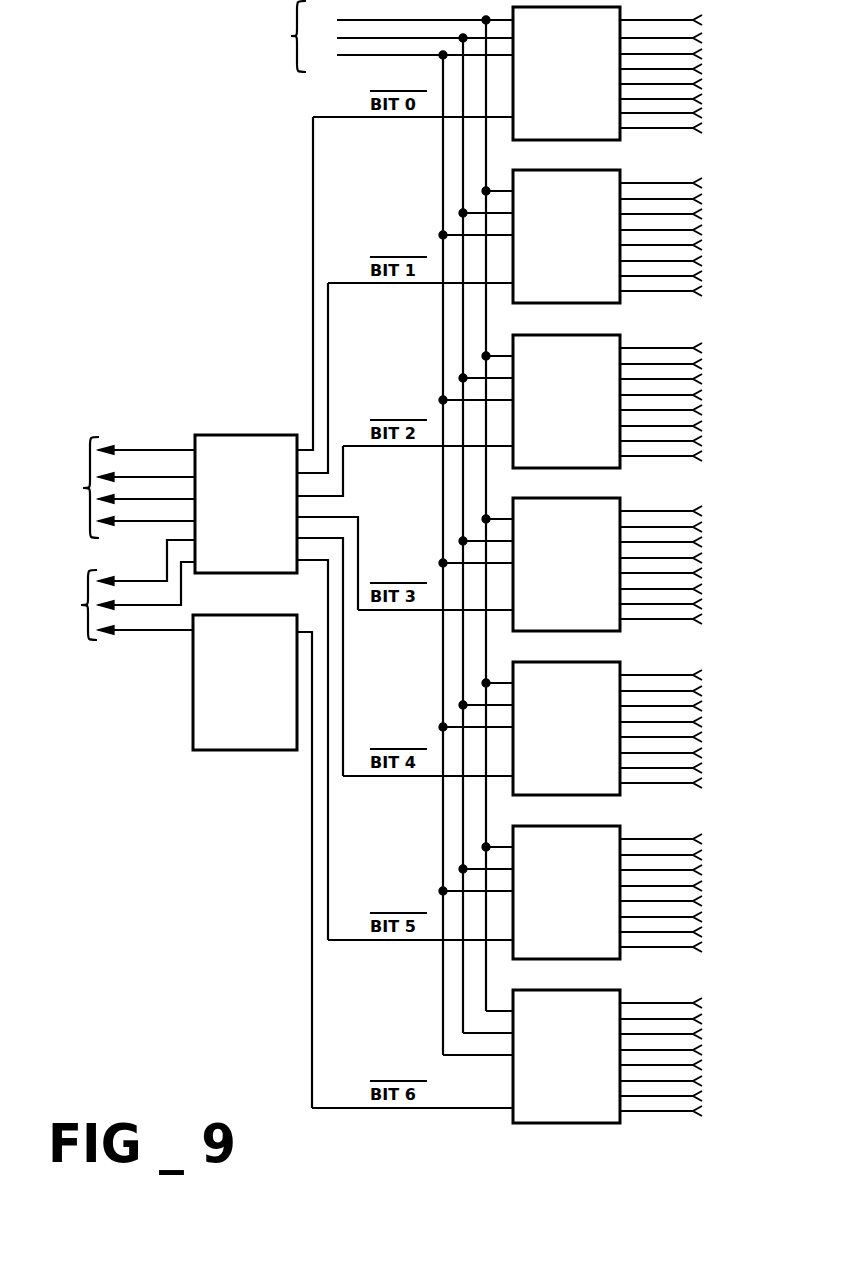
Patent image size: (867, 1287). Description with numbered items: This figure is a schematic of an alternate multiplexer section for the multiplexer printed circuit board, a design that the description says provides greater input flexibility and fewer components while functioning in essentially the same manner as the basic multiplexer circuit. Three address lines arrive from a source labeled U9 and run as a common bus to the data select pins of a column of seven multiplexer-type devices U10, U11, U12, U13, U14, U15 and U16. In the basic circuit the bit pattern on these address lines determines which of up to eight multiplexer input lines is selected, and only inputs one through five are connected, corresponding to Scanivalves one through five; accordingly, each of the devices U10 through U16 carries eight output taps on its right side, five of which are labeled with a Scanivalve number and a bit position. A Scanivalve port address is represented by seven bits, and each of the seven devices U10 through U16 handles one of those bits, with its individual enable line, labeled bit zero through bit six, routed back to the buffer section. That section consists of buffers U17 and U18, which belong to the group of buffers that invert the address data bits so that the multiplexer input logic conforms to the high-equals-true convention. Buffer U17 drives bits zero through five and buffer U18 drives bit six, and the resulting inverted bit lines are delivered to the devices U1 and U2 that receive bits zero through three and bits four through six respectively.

The address source U9 is at (365, 36).
The multiplexer U10 is at (526, 73).
The multiplexer U11 is at (534, 236).
The multiplexer U12 is at (541, 401).
The multiplexer U13 is at (549, 564).
The multiplexer U14 is at (541, 728).
The multiplexer U15 is at (534, 892).
The multiplexer U16 is at (526, 1056).
The buffer U17 is at (197, 520).
The buffer U18 is at (197, 679).
The multiplexer U1 is at (68, 487).
The multiplexer U2 is at (66, 603).